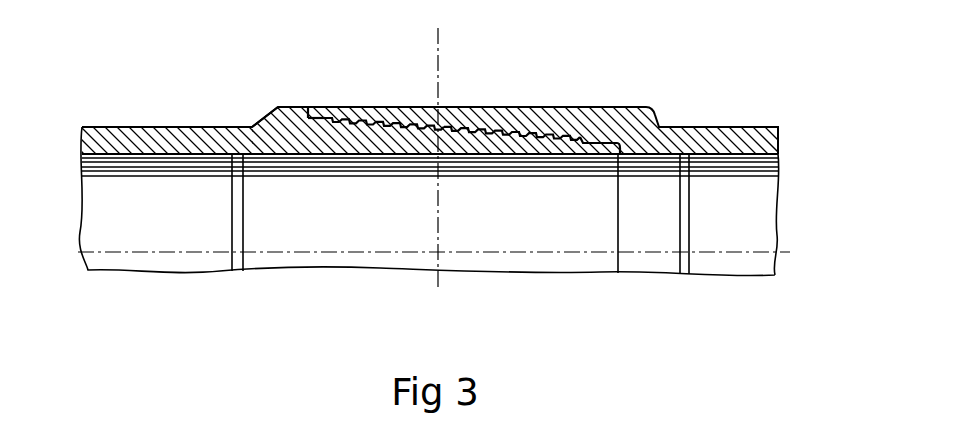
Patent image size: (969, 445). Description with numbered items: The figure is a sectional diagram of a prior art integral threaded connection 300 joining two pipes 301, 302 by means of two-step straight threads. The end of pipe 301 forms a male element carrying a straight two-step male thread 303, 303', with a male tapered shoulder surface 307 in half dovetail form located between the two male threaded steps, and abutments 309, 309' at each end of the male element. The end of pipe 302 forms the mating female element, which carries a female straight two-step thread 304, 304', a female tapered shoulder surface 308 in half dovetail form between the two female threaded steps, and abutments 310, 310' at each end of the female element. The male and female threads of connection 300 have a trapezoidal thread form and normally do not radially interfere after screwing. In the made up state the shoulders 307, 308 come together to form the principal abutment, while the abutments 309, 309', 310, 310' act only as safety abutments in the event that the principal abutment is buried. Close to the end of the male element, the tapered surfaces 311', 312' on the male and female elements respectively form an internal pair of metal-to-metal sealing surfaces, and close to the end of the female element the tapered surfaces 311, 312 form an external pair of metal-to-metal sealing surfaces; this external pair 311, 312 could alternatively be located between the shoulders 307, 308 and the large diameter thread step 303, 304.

The connection 300 is at (712, 95).
The pipe 301 is at (203, 126).
The pipe 302 is at (728, 128).
The straight two-step male thread 303 is at (260, 189).
The straight two-step male thread 303' is at (608, 194).
The female straight two-step thread 304 is at (384, 85).
The female straight two-step thread 304' is at (512, 105).
The male tapered shoulder surface 307 is at (487, 107).
The female tapered shoulder surface 308 is at (444, 134).
The abutment 309 is at (292, 79).
The abutment 309' is at (626, 100).
The abutment 310 is at (216, 83).
The abutment 310' is at (649, 234).
The tapered surface 311 is at (337, 62).
The tapered surface 311' is at (575, 84).
The tapered surface 312 is at (275, 216).
The tapered surface 312' is at (607, 229).